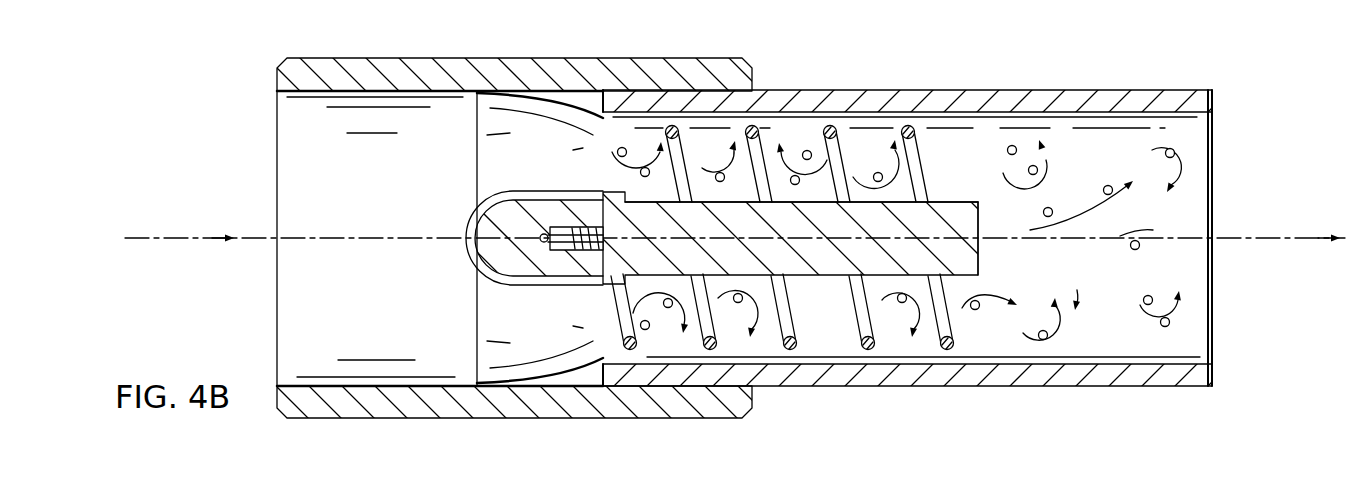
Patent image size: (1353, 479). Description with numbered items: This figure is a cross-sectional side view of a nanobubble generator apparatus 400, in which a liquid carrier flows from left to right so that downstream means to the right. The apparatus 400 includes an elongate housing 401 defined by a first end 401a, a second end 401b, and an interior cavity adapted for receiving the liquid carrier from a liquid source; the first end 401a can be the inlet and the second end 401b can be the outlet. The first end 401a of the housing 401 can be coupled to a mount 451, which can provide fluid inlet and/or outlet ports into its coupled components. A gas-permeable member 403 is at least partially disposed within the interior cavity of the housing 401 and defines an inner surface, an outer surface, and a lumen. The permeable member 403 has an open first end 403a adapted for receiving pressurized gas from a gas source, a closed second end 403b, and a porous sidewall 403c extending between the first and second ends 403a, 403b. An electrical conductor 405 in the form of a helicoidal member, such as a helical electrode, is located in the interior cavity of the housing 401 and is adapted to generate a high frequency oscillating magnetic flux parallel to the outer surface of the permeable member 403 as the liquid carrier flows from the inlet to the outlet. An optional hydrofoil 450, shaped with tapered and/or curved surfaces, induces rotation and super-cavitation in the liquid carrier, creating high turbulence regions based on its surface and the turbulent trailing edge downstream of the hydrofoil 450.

The apparatus 400 is at (203, 96).
The mount 451 is at (277, 159).
The housing 401 is at (922, 86).
The first end 401a is at (594, 96).
The second end 401b is at (1217, 98).
The hydrofoil 450 is at (548, 191).
The permeable member 403 is at (813, 290).
The first end 403a is at (560, 252).
The second end 403b is at (980, 243).
The porous sidewall 403c is at (782, 200).
The electrical conductor 405 is at (930, 170).